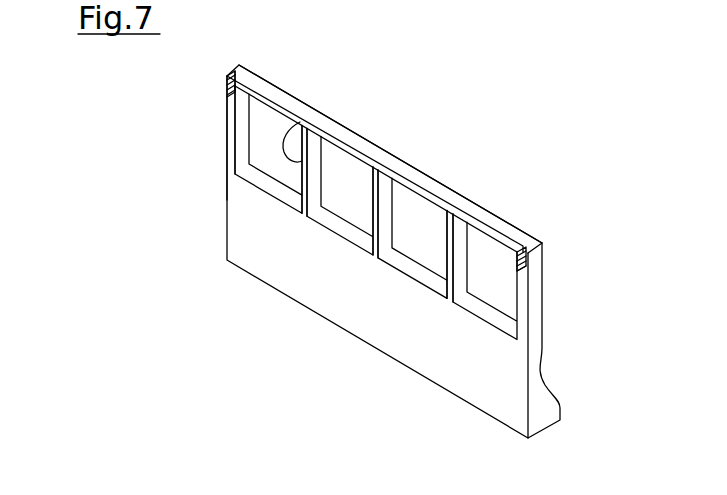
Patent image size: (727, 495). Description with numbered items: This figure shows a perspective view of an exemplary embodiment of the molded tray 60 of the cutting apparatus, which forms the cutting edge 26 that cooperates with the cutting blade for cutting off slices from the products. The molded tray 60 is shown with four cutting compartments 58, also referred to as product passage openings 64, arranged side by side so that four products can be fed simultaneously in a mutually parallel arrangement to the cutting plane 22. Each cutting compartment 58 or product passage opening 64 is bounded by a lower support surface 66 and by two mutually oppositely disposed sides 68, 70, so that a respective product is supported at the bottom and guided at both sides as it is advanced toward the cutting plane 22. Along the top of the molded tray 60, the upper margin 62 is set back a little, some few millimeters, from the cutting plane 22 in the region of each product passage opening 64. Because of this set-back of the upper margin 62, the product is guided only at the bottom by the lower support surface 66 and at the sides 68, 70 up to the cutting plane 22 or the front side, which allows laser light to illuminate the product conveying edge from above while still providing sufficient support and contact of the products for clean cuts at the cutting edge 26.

The cutting plane 22 is at (508, 402).
The cutting edge 26 is at (417, 113).
The molded tray 60 is at (383, 157).
The cutting compartment 58 is at (438, 161).
The product passage opening 64 is at (480, 258).
The upper margin 62 is at (468, 205).
The lower support surface 66 is at (278, 188).
The side 68 is at (245, 120).
The side 70 is at (283, 138).